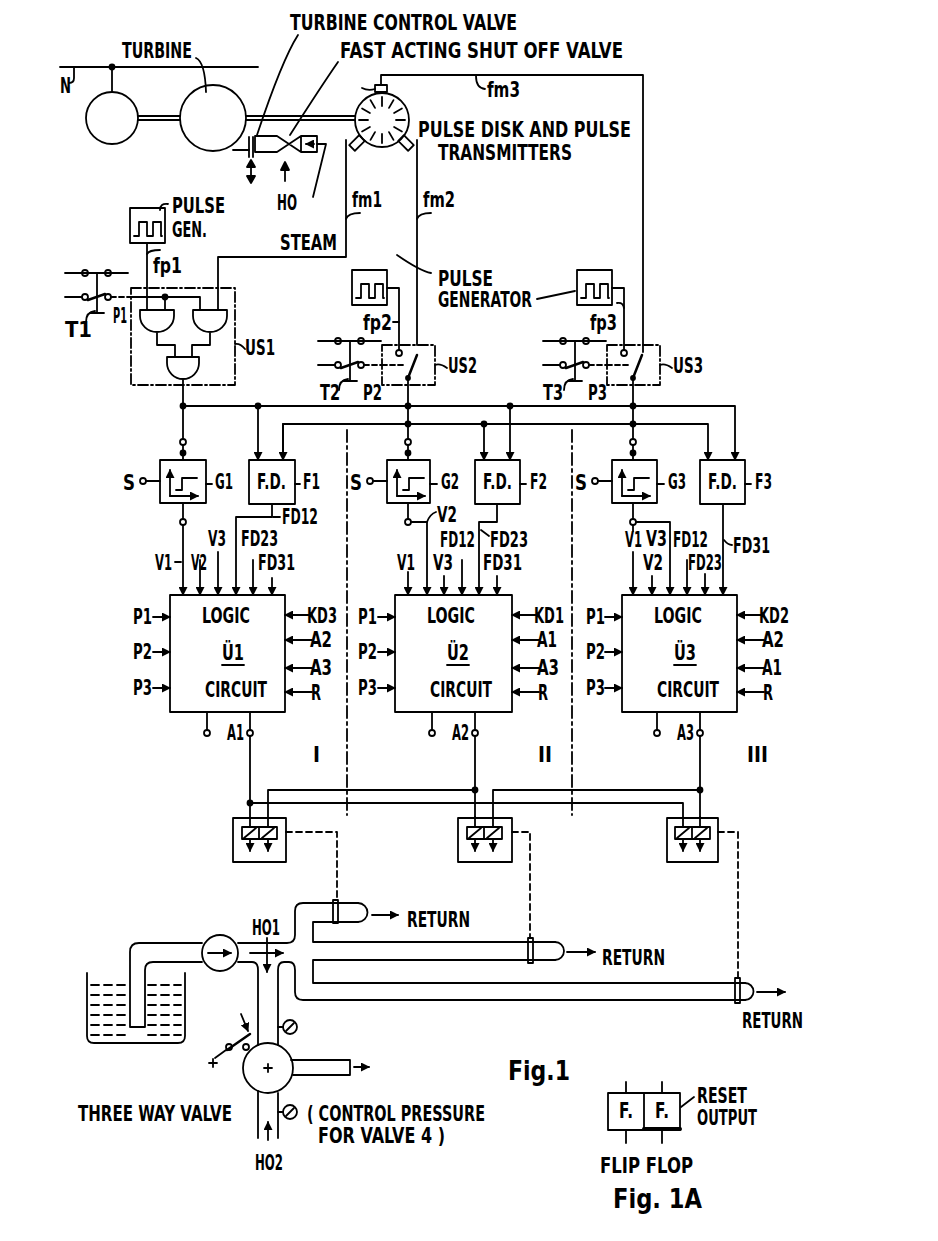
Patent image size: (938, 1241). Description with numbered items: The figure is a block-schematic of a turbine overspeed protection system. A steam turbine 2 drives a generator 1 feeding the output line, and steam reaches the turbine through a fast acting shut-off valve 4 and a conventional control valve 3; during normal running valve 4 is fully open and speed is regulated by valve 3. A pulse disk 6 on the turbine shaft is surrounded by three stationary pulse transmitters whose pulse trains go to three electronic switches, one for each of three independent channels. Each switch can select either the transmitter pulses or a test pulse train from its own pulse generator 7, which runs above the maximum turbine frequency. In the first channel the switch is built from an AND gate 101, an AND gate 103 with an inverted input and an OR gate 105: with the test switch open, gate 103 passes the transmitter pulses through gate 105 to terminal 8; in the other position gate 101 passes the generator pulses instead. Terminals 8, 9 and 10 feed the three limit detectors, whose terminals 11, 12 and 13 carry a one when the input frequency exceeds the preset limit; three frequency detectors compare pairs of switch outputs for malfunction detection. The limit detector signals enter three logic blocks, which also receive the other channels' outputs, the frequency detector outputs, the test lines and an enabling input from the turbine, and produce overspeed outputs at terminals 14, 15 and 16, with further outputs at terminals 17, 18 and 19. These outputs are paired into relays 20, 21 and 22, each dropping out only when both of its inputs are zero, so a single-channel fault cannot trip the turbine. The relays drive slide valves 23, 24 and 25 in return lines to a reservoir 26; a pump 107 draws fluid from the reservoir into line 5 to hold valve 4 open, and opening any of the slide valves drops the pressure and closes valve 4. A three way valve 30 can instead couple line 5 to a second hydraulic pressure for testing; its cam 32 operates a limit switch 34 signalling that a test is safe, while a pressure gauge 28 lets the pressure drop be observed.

The generator 1 is at (113, 144).
The steam turbine 2 is at (194, 143).
The control valve 3 is at (246, 156).
The fast acting shut-off valve 4 is at (279, 155).
The line 5 is at (344, 1084).
The pulse disk 6 is at (405, 108).
The pulse generator 7 is at (130, 220).
The terminal 8 is at (186, 442).
The terminal 9 is at (411, 442).
The terminal 10 is at (636, 442).
The terminal 11 is at (179, 524).
The terminal 12 is at (404, 524).
The terminal 13 is at (629, 522).
The terminal 14 is at (253, 733).
The terminal 15 is at (478, 733).
The terminal 16 is at (703, 733).
The auxiliary output terminal of logic circuit U1 17 is at (205, 736).
The auxiliary output terminal of logic circuit U2 18 is at (430, 736).
The auxiliary output terminal of logic circuit U3 19 is at (655, 736).
The relay 20 is at (233, 840).
The relay 21 is at (458, 840).
The relay 22 is at (667, 840).
The slide valve 23 is at (339, 901).
The slide valve 24 is at (534, 940).
The slide valve 25 is at (741, 980).
The reservoir 26 is at (122, 1044).
The pressure gauge 28 is at (298, 1027).
The valve 30 is at (291, 1104).
The cam 32 is at (244, 1084).
The limit switch 34 is at (239, 1037).
The AND gate 101 is at (142, 327).
The AND gate 103 is at (214, 322).
The OR gate 105 is at (178, 381).
The pump 107 is at (211, 936).